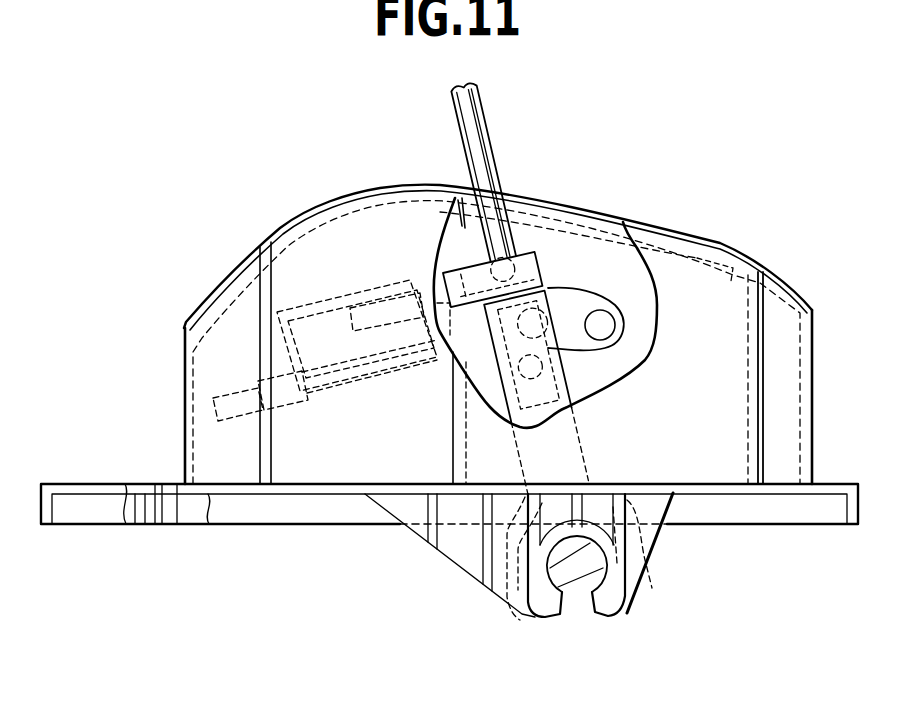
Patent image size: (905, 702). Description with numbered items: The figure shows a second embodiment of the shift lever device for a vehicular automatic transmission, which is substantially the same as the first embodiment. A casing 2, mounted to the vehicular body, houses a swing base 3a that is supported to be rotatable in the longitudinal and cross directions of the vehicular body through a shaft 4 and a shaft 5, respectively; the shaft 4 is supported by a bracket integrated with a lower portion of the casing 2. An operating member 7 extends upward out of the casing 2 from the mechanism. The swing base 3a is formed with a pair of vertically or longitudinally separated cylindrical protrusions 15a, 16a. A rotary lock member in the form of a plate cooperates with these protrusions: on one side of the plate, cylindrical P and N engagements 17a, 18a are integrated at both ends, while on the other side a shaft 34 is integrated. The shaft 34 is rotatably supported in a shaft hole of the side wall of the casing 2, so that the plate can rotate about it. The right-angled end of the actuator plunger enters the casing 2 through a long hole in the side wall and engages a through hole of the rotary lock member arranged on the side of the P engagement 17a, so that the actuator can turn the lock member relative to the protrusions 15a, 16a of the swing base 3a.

The casing 2 is at (228, 338).
The control rod 7 is at (480, 128).
The P engagement 17a is at (441, 268).
The cylindrical protrusion 15a is at (505, 270).
The shaft 34 is at (547, 310).
The N engagement 18a is at (602, 322).
The cylindrical protrusion 16a is at (540, 368).
The swing base 3a is at (505, 380).
The shaft 5 is at (632, 558).
The shaft 4 is at (582, 568).